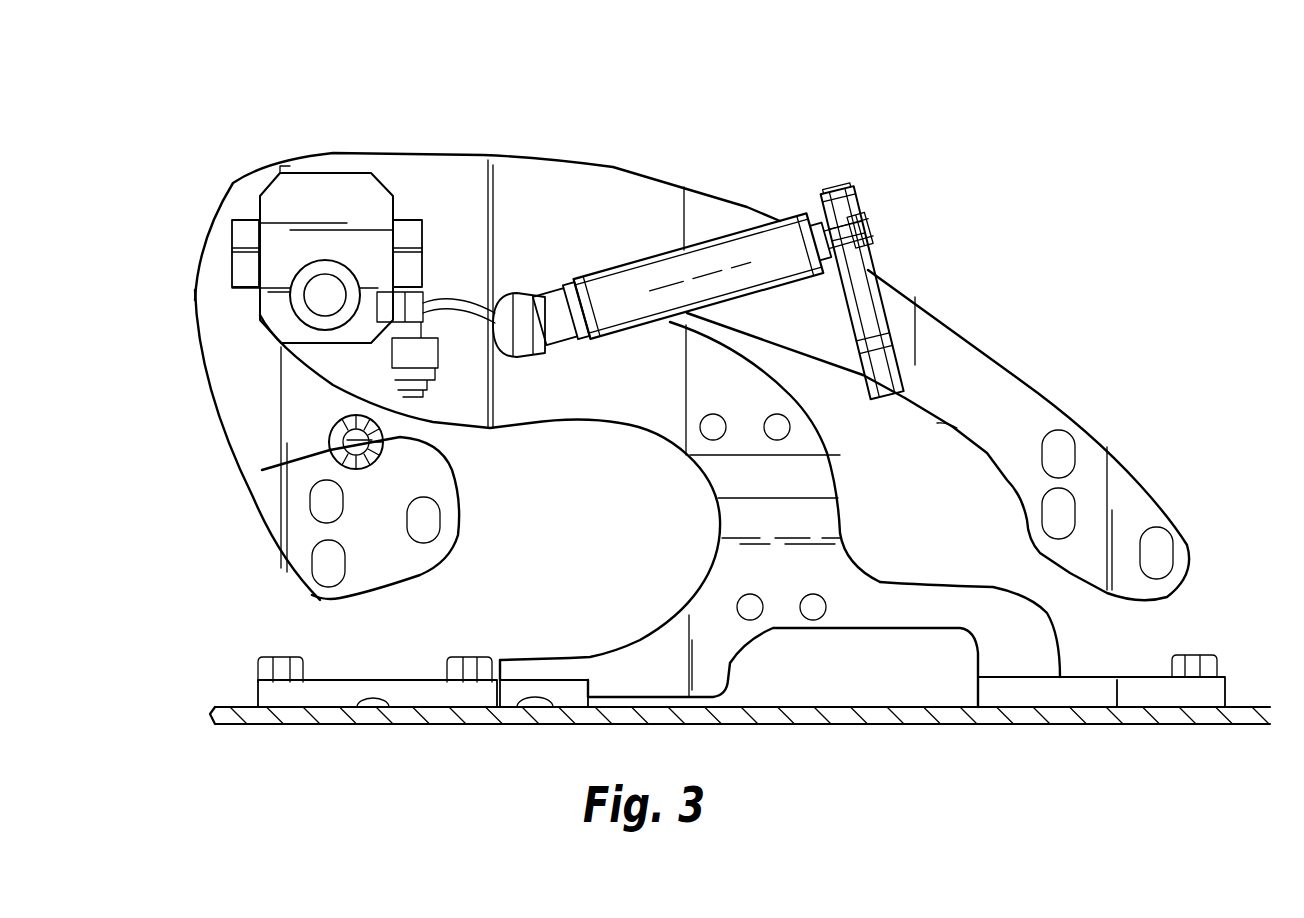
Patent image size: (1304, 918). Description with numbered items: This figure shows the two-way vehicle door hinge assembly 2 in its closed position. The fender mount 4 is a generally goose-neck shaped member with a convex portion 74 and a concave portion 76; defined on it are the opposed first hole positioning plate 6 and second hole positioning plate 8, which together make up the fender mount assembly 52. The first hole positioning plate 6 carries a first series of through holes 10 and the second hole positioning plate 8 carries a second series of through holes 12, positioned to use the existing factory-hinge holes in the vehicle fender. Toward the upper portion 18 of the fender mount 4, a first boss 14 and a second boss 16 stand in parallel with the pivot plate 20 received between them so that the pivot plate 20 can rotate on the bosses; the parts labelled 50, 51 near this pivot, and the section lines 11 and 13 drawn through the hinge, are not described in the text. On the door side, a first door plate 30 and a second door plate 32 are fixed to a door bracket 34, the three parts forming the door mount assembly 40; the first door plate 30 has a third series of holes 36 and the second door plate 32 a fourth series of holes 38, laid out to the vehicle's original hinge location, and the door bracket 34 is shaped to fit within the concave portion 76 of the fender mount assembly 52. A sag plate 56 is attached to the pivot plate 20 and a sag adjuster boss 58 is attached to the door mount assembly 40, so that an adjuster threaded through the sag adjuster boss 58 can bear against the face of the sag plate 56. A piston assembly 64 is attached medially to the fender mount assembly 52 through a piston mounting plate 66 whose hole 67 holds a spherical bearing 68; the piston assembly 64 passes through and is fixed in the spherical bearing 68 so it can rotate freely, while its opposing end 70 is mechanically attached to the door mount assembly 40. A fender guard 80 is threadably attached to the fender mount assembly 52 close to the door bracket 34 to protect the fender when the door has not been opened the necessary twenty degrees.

The vehicle door hinge assembly 2 is at (609, 130).
The fender mount 4 is at (623, 160).
The first hole positioning plate 6 is at (270, 543).
The second hole positioning plate 8 is at (1200, 559).
The first series of through holes 10 is at (646, 361).
The section line 11- 11 is at (287, 297).
The second series of through holes 12 is at (1170, 535).
The section line 13- 13 is at (413, 440).
The first boss 14 is at (243, 217).
The second boss 16 is at (414, 217).
The upper portion 18 is at (210, 243).
The pivot plate 20 is at (349, 187).
The first door plate 30 is at (333, 697).
The second door plate 32 is at (1148, 713).
The door bracket 34 is at (870, 578).
The third series of holes 36 is at (458, 657).
The fourth series of holes 38 is at (1185, 657).
The door mount assembly 40 is at (631, 430).
The pivot pin 50 is at (300, 308).
The bushing 51 is at (325, 295).
The fender mount assembly 52 is at (545, 152).
The sag plate 56 is at (392, 366).
The sag adjuster boss 58 is at (432, 326).
The piston assembly 64 is at (742, 240).
The piston mounting plate 66 is at (847, 190).
The hole 67 is at (855, 195).
The spherical bearing 68 is at (879, 241).
The opposing end 70 is at (560, 345).
The convex portion 74 is at (1052, 390).
The concave portion 76 is at (967, 420).
The fender guard 80 is at (340, 447).